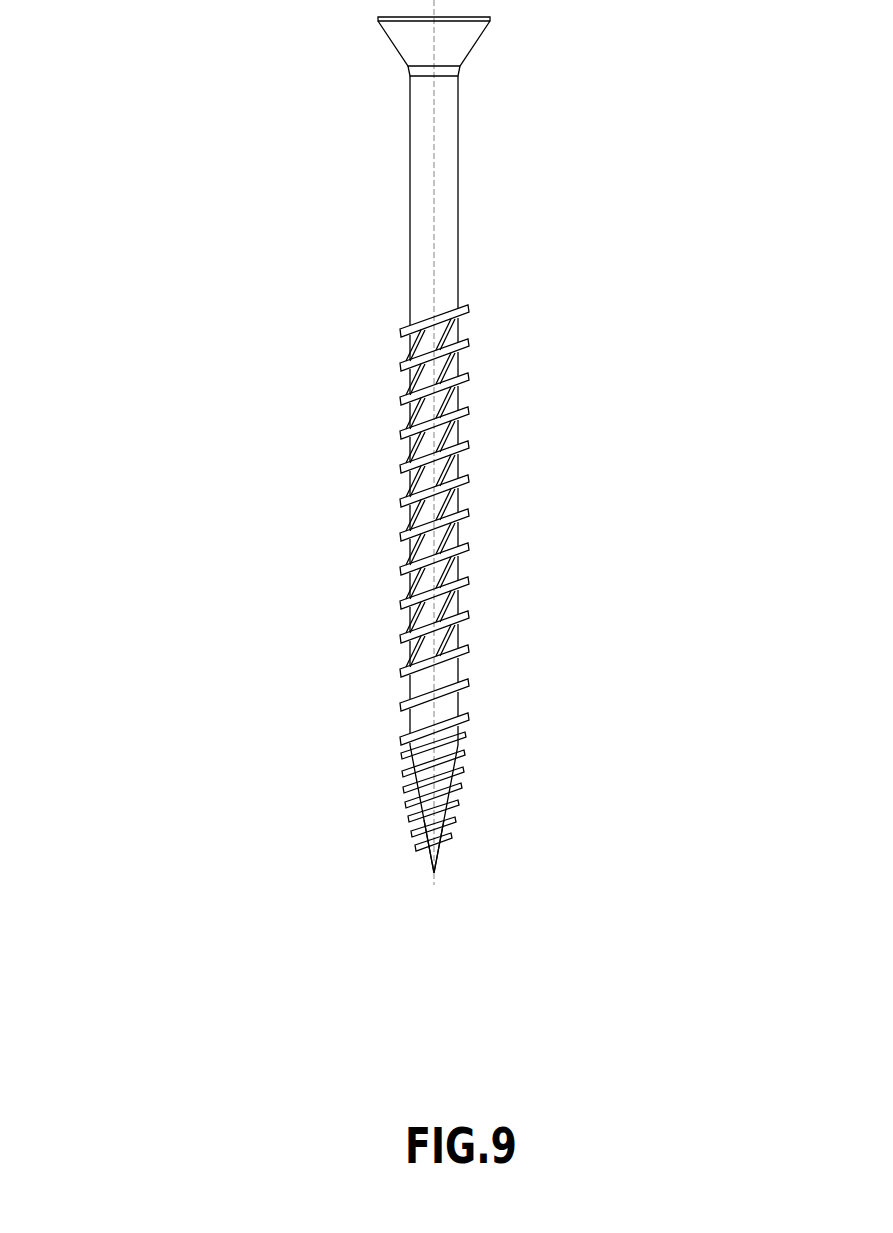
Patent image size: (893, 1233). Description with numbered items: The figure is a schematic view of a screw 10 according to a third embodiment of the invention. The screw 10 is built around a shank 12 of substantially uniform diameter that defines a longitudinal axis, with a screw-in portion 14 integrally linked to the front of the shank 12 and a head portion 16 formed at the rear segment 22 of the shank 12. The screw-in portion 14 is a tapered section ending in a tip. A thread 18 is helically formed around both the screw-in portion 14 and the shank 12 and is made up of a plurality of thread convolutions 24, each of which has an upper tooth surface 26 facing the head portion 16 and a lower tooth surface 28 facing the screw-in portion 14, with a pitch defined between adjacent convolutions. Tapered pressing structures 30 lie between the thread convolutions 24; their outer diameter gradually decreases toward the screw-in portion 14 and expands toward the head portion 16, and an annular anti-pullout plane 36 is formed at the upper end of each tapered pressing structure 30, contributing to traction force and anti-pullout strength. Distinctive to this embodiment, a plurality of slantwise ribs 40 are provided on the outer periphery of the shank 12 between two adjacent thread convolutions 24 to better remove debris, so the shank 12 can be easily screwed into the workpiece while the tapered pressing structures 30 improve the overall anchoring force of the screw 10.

The screw 10 is at (330, 522).
The shank 12 is at (445, 207).
The screw-in portion 14 is at (428, 848).
The head portion 16 is at (453, 42).
The thread 18 is at (468, 378).
The rear segment 22 is at (423, 110).
The thread convolution 24 is at (462, 485).
The upper tooth surface 26 is at (462, 582).
The lower tooth surface 28 is at (462, 582).
The tapered pressing structure 30 is at (417, 752).
The annular anti-pullout plane 36 is at (414, 781).
The slantwise rib 40 is at (450, 585).